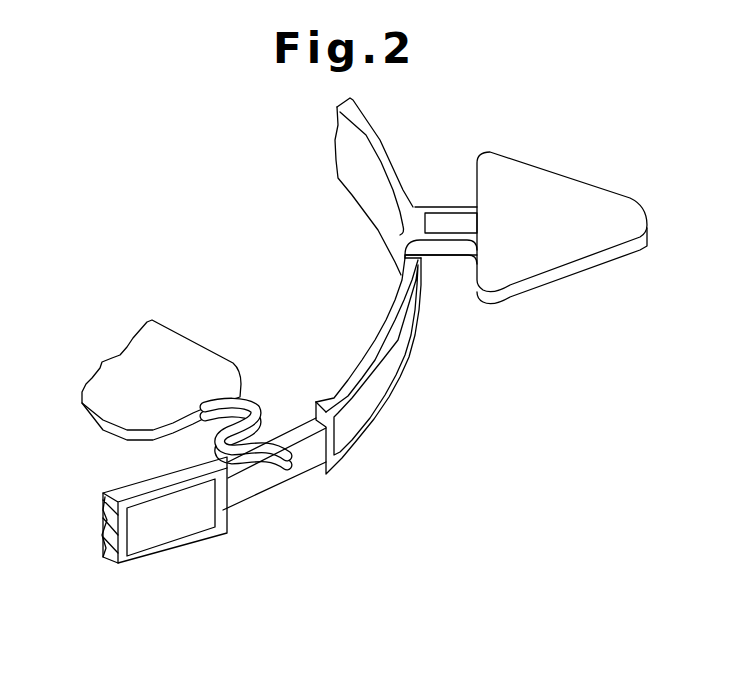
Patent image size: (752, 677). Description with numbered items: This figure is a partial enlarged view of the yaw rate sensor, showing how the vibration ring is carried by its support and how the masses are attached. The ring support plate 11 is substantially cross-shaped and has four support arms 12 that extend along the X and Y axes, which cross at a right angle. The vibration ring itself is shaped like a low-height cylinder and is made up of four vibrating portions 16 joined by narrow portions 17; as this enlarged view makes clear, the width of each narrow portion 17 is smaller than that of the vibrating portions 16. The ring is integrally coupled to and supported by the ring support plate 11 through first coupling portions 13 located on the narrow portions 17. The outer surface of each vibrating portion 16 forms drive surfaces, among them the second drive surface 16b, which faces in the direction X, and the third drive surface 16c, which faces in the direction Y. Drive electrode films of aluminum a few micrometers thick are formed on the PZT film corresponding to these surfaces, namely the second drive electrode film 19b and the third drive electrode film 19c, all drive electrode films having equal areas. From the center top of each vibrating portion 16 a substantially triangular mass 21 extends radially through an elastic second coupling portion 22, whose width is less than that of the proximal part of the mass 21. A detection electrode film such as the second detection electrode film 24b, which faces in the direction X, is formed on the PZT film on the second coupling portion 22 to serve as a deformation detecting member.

The ring support plate 11 is at (173, 338).
The support arm 12 is at (193, 351).
The first coupling portion 13 is at (253, 402).
The vibrating portion 16 is at (292, 428).
The second drive surface 16b is at (402, 408).
The third drive surface 16c is at (147, 557).
The narrow portion 17 is at (300, 470).
The second drive electrode film 19b is at (400, 372).
The third drive electrode film 19c is at (185, 528).
The mass 21 is at (543, 175).
The second coupling portion 22 is at (437, 207).
The second detection electrode film 24b is at (450, 235).